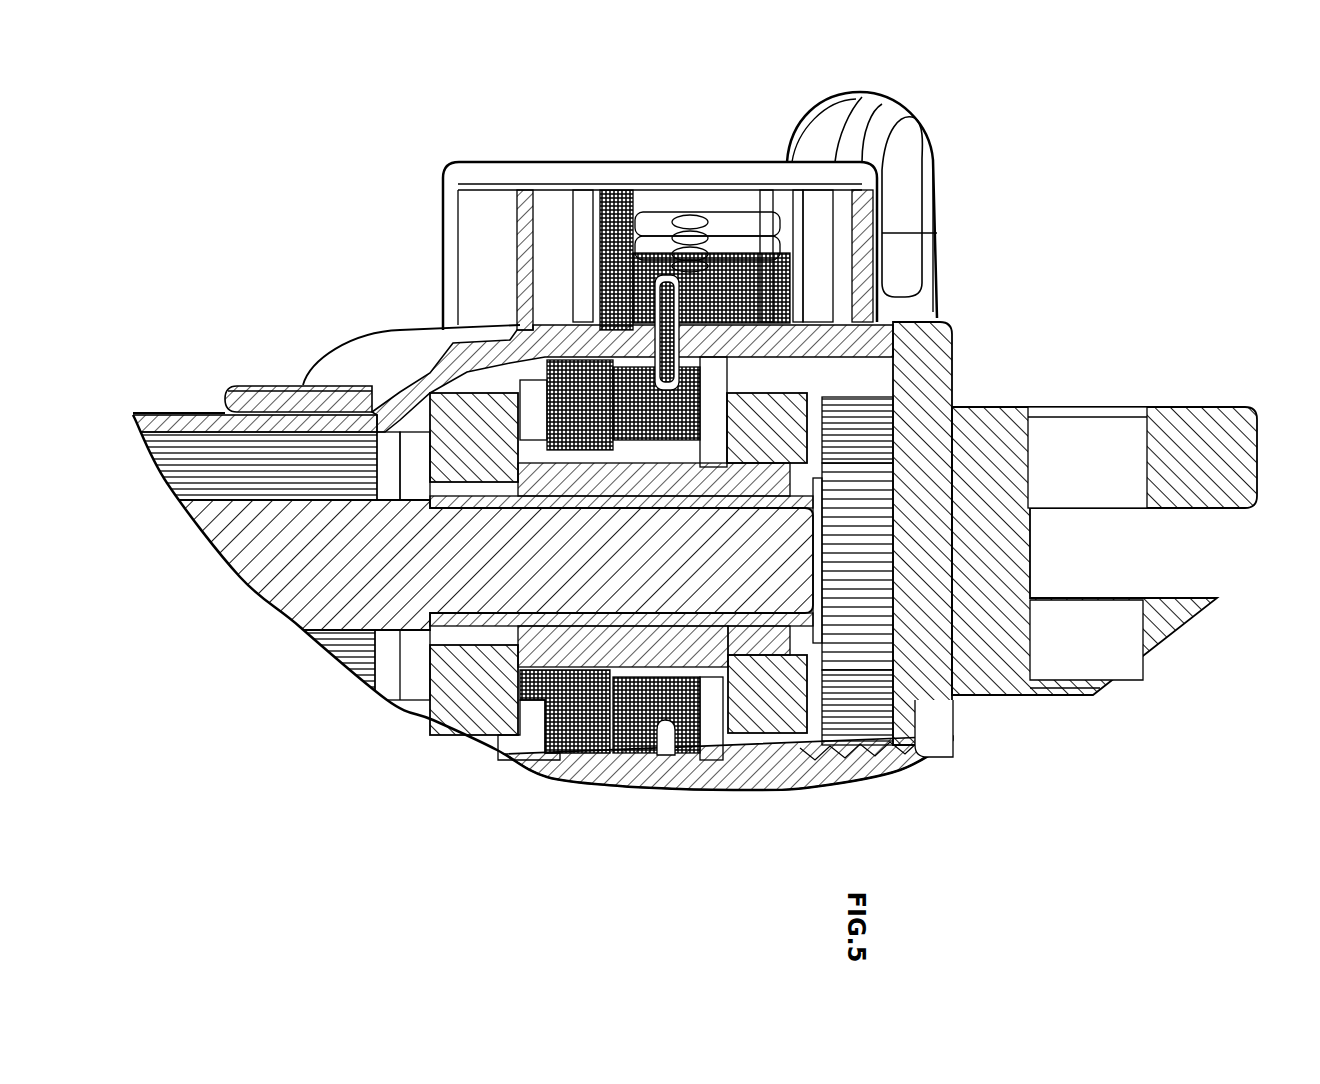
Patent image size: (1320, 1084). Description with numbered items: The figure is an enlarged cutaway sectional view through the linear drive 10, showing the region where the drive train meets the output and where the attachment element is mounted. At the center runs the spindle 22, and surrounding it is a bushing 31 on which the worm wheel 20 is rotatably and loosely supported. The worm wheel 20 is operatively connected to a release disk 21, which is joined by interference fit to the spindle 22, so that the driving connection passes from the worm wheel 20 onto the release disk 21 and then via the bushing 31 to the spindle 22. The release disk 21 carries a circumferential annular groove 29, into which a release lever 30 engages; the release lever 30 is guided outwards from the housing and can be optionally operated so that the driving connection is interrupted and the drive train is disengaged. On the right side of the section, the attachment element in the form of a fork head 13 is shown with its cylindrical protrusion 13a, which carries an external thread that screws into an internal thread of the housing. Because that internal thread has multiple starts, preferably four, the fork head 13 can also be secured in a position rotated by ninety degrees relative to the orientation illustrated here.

The linear drive 10 is at (252, 383).
The fork head 13 is at (1230, 437).
The cylindrical protrusion 13a is at (953, 735).
The worm wheel 20 is at (550, 718).
The release disk 21 is at (643, 783).
The spindle 22 is at (313, 580).
The circumferential annular groove 29 is at (673, 785).
The release lever 30 is at (665, 291).
The bushing 31 is at (837, 470).